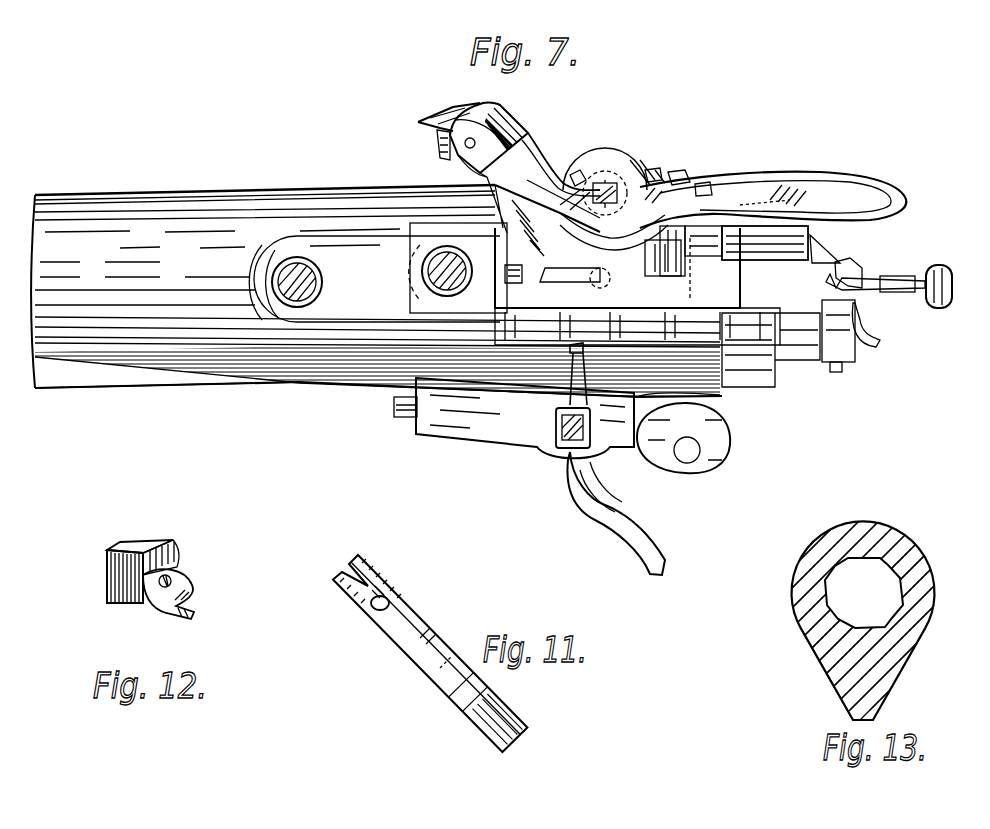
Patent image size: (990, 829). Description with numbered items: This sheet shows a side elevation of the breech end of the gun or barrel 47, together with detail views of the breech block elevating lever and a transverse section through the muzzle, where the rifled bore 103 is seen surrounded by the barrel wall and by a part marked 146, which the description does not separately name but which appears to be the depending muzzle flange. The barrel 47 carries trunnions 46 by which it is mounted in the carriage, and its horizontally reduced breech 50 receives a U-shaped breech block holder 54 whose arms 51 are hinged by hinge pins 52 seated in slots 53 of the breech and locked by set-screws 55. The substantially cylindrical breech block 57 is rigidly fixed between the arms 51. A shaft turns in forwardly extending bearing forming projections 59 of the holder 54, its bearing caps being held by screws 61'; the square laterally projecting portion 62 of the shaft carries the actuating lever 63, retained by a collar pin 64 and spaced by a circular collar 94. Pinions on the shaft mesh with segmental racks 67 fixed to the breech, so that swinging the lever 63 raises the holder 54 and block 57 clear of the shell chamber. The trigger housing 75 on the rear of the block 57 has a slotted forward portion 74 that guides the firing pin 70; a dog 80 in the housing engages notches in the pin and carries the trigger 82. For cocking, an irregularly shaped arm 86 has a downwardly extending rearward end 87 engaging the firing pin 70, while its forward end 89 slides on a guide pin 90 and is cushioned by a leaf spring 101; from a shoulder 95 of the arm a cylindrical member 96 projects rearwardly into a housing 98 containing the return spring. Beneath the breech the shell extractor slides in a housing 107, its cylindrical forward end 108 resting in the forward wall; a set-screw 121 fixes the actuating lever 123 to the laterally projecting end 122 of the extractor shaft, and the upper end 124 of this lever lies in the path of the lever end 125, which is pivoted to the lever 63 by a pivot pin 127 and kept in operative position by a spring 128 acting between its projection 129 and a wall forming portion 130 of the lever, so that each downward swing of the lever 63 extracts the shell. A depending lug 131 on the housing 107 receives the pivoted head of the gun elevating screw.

In FIG. 7, the gun or barrel 47 is at (177, 208).
In FIG. 13, the gun or barrel 47 is at (805, 570).
In FIG. 7, the stock bottom / butt portion 146 is at (73, 380).
In FIG. 13, the stock bottom / butt portion 146 is at (897, 677).
In FIG. 7, the trunnions 46 is at (308, 282).
In FIG. 7, the hinge pins 52 is at (440, 270).
In FIG. 7, the slots 53 is at (350, 295).
In FIG. 7, the breech 50 is at (720, 398).
In FIG. 7, the breech block 57 is at (740, 382).
In FIG. 7, the end portion of the lever 125 is at (450, 115).
In FIG. 12, the end portion of the lever 125 is at (133, 558).
In FIG. 7, the pivot pin 127 is at (478, 140).
In FIG. 7, the wall forming portion 130 is at (525, 134).
In FIG. 11, the wall forming portion 130 is at (386, 600).
In FIG. 7, the segmental racks 67 is at (440, 145).
In FIG. 7, the projection 129 is at (458, 170).
In FIG. 12, the projection 129 is at (181, 620).
In FIG. 7, the spring 128 is at (543, 205).
In FIG. 7, the arms 51 is at (540, 270).
In FIG. 7, the bearing forming projections 59 is at (614, 223).
In FIG. 7, the circular collar 94 is at (585, 155).
In FIG. 7, the collar pin 64 is at (610, 183).
In FIG. 7, the laterally projecting portion of the shaft 62 is at (650, 168).
In FIG. 7, the screws 61' is at (624, 164).
In FIG. 7, the leaf spring 101 is at (700, 184).
In FIG. 7, the actuating lever 63 is at (800, 178).
In FIG. 11, the actuating lever 63 is at (417, 637).
In FIG. 7, the set-screws 55 is at (520, 283).
In FIG. 7, the forward end portion of the arm 89 is at (562, 283).
In FIG. 7, the guide pin 90 is at (602, 283).
In FIG. 7, the arm 86 is at (650, 258).
In FIG. 7, the off-set portion or shoulder 95 is at (686, 278).
In FIG. 7, the cylindrical member 96 is at (718, 262).
In FIG. 7, the housing 98 is at (797, 243).
In FIG. 7, the breech block holder 54 is at (692, 252).
In FIG. 7, the slotted forwardly extending portion 74 is at (832, 256).
In FIG. 7, the rearward end portion of the arm 87 is at (862, 262).
In FIG. 7, the dog 80 is at (860, 290).
In FIG. 7, the firing pin 70 is at (933, 272).
In FIG. 7, the trigger 82 is at (875, 335).
In FIG. 7, the trigger housing 75 is at (845, 366).
In FIG. 7, the housing 107 is at (505, 435).
In FIG. 7, the forward end portion of the extractor 108 is at (404, 418).
In FIG. 7, the depending lug 131 is at (712, 455).
In FIG. 7, the upper end portion of the lever 124 is at (572, 355).
In FIG. 7, the set-screw 121 is at (592, 425).
In FIG. 7, the laterally projecting end portion of the shaft 122 is at (572, 440).
In FIG. 7, the actuating lever 123 is at (612, 508).
In FIG. 13, the bore 103 is at (873, 553).